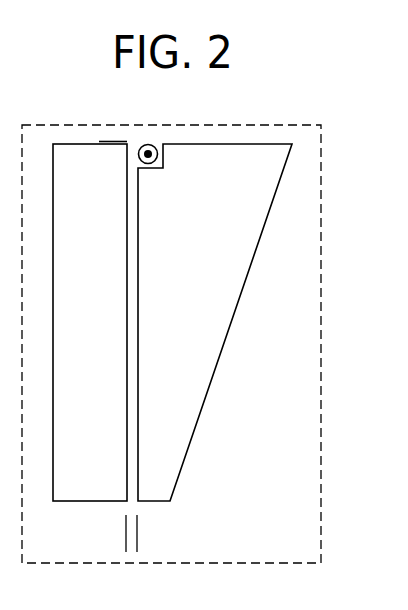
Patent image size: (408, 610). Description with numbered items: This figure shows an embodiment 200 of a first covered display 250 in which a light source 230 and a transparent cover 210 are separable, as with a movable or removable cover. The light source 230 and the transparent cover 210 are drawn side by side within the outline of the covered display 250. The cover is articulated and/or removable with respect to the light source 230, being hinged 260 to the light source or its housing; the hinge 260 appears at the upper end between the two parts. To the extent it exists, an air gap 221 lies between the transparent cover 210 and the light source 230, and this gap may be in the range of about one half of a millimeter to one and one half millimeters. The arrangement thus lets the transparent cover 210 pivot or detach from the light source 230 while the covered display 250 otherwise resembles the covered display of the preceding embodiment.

The embodiment 200 is at (259, 108).
The transparent cover 210 is at (238, 193).
The air gap 221 is at (97, 530).
The light source 230 is at (108, 193).
The covered display 250 is at (322, 402).
The hinge 260 is at (137, 141).